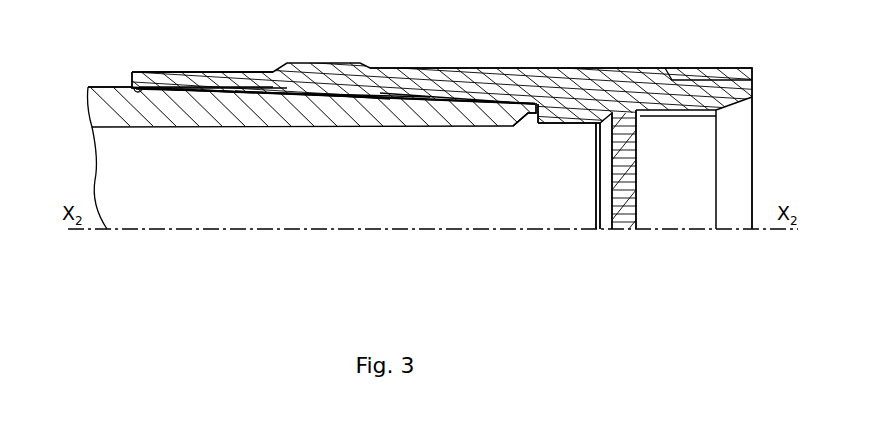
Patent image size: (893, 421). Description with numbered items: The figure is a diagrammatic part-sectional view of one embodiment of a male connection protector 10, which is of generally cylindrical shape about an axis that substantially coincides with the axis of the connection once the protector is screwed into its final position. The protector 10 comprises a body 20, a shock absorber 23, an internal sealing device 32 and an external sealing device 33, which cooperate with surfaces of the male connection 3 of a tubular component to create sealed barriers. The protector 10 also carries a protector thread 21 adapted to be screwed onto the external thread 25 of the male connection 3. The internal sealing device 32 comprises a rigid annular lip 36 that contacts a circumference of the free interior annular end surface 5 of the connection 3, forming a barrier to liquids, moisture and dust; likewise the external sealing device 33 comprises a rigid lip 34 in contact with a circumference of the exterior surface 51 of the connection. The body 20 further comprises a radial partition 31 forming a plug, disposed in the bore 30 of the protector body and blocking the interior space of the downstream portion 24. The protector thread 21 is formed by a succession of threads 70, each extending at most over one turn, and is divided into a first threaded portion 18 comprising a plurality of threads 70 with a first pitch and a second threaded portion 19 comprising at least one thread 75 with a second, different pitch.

The male connection 3 is at (90, 128).
The exterior surface 51 is at (94, 87).
The rigid lip 34 is at (133, 85).
The external sealing device 33 is at (137, 72).
The second threaded portion 19 is at (232, 82).
The first threaded portion 18 is at (358, 88).
The downstream portion 24 is at (367, 80).
The protector thread 21 is at (403, 92).
The rigid annular lip 36 is at (533, 103).
The protector 10 is at (561, 65).
The body 20 is at (598, 87).
The shock absorber 23 is at (707, 86).
The external thread 25 is at (225, 93).
The thread 75 is at (246, 93).
The threads 70 is at (383, 103).
The free interior annular end surface 5 is at (530, 125).
The internal sealing device 32 is at (535, 123).
The bore 30 is at (570, 128).
The radial partition 31 is at (637, 229).